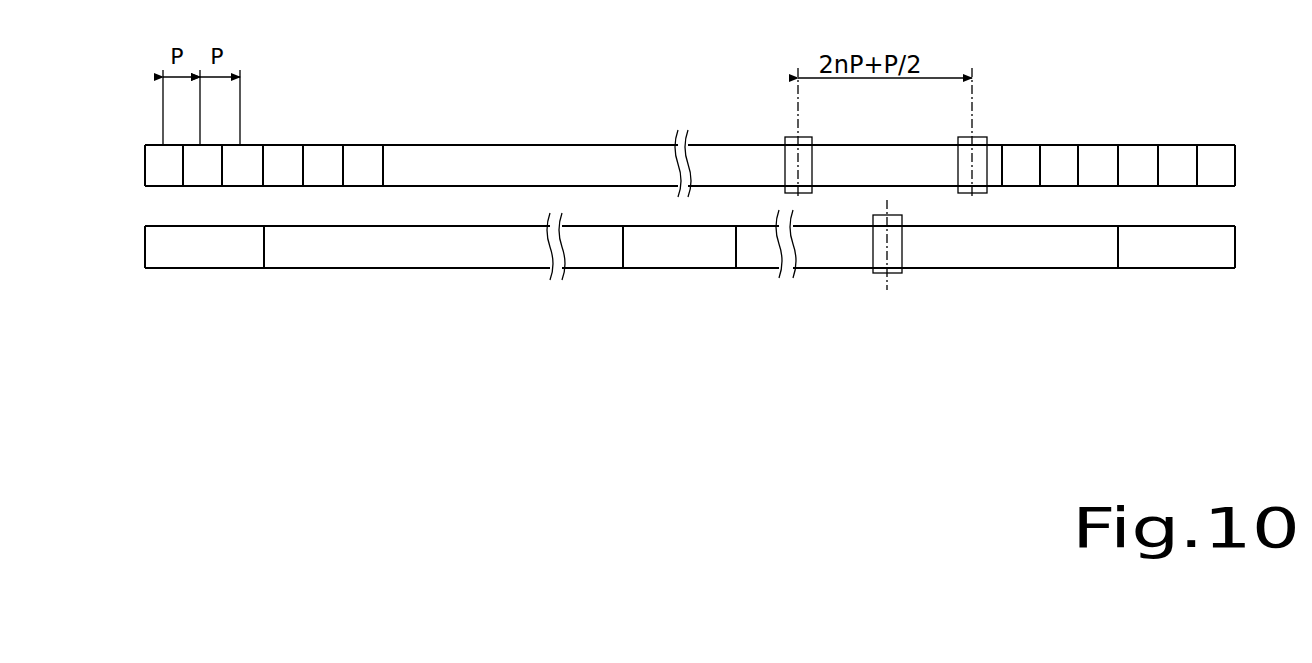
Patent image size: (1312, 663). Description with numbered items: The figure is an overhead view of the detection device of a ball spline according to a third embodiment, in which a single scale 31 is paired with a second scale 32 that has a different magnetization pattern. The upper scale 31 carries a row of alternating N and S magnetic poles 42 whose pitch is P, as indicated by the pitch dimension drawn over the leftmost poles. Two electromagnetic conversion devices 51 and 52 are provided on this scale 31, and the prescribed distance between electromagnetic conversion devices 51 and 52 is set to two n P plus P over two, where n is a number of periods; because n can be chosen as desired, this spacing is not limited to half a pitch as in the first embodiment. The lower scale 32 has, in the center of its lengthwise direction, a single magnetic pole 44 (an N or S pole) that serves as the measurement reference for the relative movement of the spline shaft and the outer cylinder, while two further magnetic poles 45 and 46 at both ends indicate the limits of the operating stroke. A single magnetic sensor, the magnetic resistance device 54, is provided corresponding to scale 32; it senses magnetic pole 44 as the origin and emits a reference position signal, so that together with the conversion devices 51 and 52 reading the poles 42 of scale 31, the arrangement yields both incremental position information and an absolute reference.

The scale 31 is at (505, 142).
The scale 32 is at (475, 268).
The magnetic poles 42 is at (247, 145).
The magnetic pole 44 is at (710, 260).
The magnetic pole 45 is at (248, 262).
The magnetic pole 46 is at (1202, 257).
The electromagnetic conversion device 51 is at (980, 130).
The electromagnetic conversion device 52 is at (790, 137).
The magnetic resistance device 54 is at (892, 275).